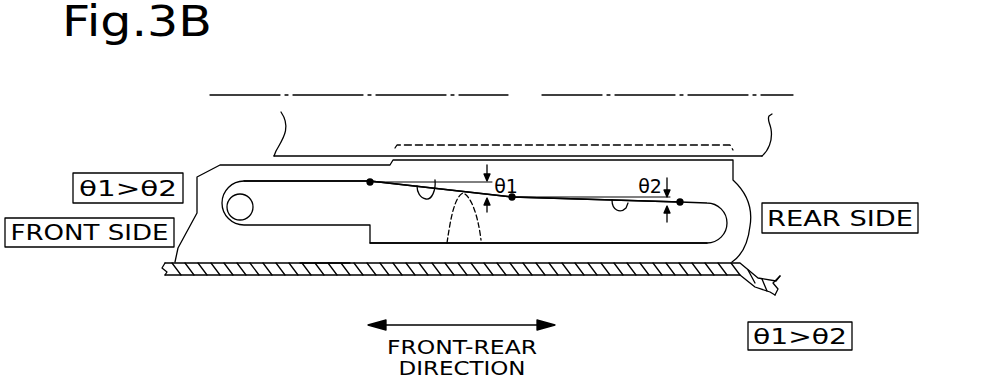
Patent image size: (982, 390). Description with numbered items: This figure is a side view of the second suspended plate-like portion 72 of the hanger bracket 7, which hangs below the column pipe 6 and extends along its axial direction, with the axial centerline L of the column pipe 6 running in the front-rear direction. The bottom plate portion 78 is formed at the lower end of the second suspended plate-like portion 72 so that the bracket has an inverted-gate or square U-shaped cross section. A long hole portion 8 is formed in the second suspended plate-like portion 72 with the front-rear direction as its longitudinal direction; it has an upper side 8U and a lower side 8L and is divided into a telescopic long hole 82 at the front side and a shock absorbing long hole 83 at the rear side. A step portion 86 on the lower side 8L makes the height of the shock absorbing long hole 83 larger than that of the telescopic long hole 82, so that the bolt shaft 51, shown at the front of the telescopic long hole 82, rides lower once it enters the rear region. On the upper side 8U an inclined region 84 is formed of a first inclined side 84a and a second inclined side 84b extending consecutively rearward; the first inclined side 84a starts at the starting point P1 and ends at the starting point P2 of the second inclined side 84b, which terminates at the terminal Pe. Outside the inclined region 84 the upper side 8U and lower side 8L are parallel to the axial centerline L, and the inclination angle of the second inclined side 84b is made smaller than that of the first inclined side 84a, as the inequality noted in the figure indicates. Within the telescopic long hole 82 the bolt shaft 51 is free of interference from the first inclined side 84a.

The column pipe 6 is at (758, 128).
The hanger bracket 7 is at (690, 276).
The long hole portion 8 is at (279, 211).
The upper side 8U is at (312, 184).
The lower side 8L is at (570, 243).
The bolt shaft 51 is at (254, 193).
The second suspended plate-like portion 72 is at (353, 248).
The bottom plate portion 78 is at (324, 266).
The telescopic long hole 82 is at (313, 212).
The shock absorbing long hole 83 is at (640, 226).
The inclined region 84 is at (452, 127).
The first inclined side 84a is at (435, 180).
The second inclined side 84b is at (612, 200).
The step portion 86 is at (372, 243).
The axial centerline L is at (678, 92).
The starting point P1 is at (425, 194).
The starting point P2 is at (587, 208).
The terminal Pe is at (685, 214).